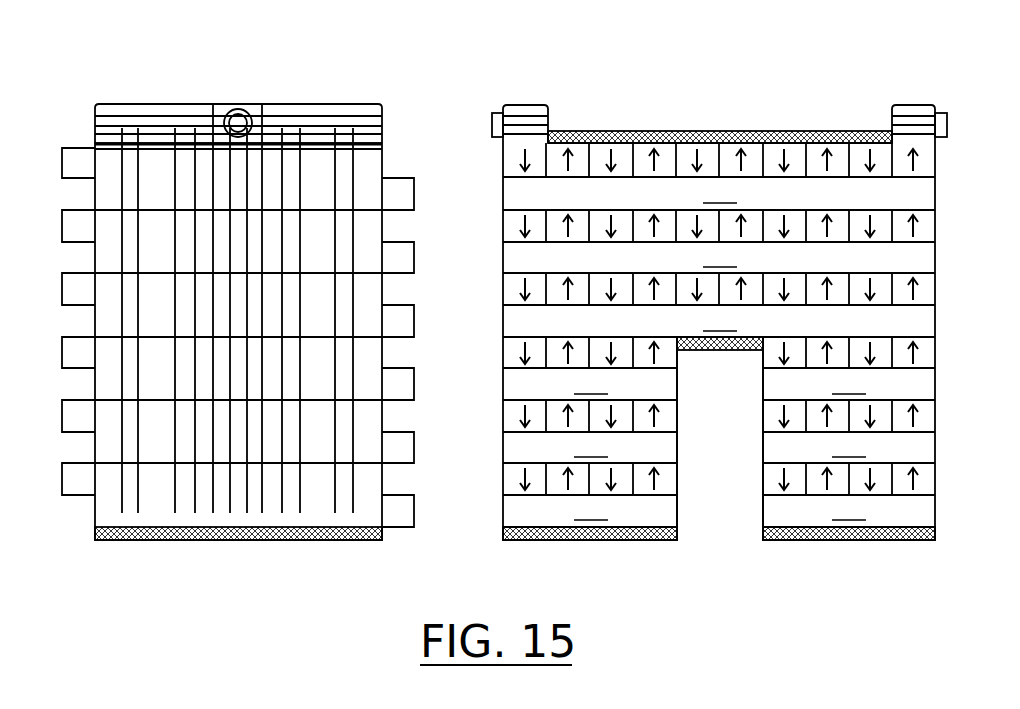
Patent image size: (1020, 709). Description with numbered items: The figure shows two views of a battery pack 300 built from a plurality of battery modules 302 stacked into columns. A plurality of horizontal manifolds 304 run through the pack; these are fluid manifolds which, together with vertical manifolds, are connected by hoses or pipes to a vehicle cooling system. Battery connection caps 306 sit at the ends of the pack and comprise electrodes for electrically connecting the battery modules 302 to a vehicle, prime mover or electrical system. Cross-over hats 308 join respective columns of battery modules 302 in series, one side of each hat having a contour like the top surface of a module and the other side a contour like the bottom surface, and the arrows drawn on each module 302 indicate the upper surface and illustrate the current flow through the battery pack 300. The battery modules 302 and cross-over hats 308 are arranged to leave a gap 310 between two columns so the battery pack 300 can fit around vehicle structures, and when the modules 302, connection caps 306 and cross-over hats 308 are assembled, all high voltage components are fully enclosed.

The battery pack 300 is at (386, 32).
The battery module 302 is at (384, 162).
The horizontal manifold 304 is at (87, 146).
The battery connection cap 306 is at (190, 104).
The cross-over hat 308 is at (692, 130).
The gap 310 is at (727, 582).